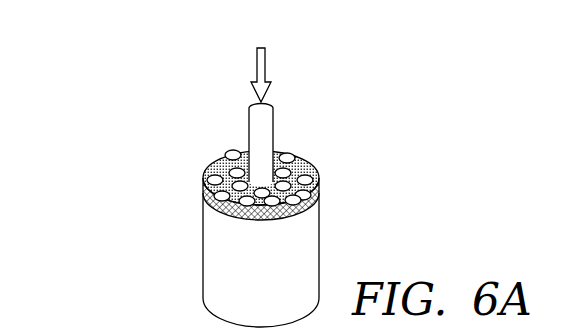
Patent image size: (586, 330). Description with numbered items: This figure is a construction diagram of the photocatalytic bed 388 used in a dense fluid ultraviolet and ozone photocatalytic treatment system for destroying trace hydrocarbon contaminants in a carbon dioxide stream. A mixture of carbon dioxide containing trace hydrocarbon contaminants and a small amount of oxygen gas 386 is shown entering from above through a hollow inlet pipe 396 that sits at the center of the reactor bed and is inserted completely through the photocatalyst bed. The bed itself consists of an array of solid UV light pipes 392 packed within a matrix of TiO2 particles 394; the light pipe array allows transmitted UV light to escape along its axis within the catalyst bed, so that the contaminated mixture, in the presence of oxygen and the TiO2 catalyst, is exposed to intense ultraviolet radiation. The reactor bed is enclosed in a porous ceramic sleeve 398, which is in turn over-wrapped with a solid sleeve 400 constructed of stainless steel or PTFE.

The contaminated carbon dioxide mixture 386 is at (262, 68).
The photocatalytic bed 388 is at (201, 216).
The solid UV light pipes 392 is at (259, 178).
The TiO2 particles 394 is at (302, 156).
The hollow inlet pipe 396 is at (259, 131).
The porous ceramic sleeve 398 is at (279, 220).
The solid sleeve 400 is at (225, 277).